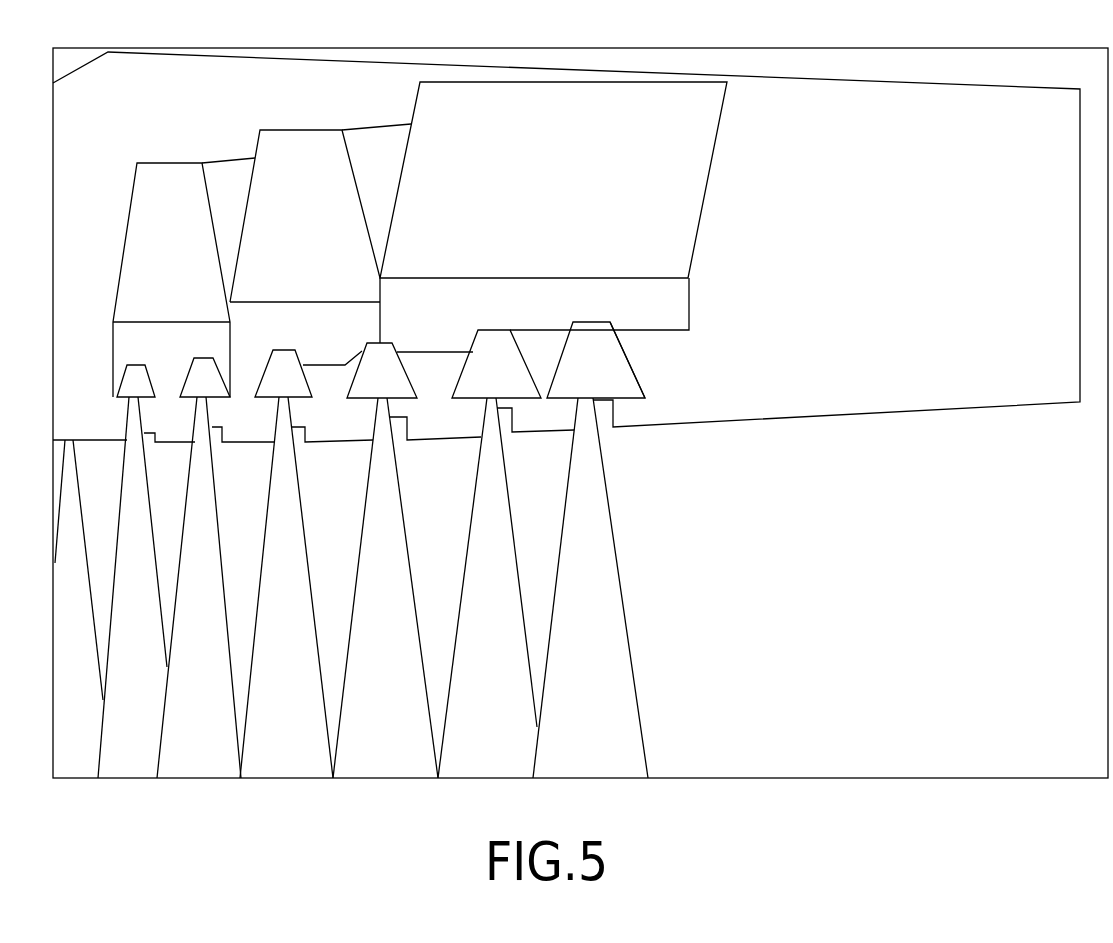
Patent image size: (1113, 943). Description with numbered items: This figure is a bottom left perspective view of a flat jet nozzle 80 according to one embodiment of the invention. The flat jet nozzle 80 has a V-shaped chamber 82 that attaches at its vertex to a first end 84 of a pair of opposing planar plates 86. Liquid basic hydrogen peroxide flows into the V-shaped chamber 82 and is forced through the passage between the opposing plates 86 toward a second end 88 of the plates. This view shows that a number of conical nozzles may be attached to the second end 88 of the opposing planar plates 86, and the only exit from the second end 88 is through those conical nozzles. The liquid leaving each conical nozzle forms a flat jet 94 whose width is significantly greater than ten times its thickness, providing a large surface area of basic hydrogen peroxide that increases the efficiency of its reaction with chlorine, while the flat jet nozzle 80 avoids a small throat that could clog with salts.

The flat jet nozzle 80 is at (572, 30).
The V-shaped chamber 82 is at (241, 198).
The first end 84 is at (366, 280).
The opposing plates 86 is at (452, 323).
The second end 88 is at (638, 375).
The flat jet 94 is at (297, 683).